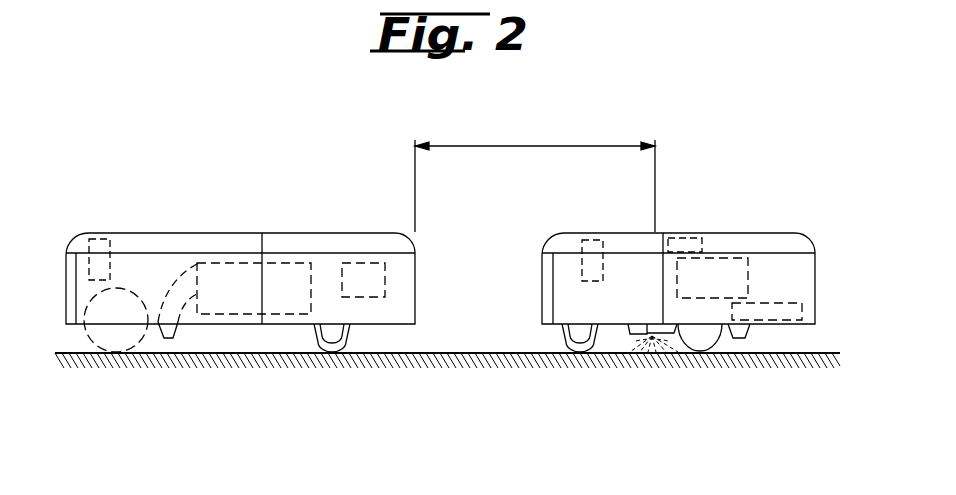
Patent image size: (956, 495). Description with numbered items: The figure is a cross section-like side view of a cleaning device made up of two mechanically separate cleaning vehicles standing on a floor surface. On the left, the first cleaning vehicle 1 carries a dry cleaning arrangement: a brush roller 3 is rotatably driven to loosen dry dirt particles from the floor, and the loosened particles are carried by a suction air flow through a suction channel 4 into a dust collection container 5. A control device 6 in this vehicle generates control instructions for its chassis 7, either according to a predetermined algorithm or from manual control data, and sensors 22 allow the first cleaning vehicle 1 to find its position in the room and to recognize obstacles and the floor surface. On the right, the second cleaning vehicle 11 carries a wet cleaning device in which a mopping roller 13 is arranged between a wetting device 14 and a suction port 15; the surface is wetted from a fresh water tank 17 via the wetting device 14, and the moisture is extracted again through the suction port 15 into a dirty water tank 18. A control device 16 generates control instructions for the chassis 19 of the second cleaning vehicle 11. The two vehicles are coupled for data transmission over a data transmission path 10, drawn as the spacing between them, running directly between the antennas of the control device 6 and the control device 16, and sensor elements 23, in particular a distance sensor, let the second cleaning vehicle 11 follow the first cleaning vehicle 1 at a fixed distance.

The first cleaning vehicle 1 is at (208, 222).
The brush roller 3 is at (105, 340).
The suction channel 4 is at (169, 338).
The dust collection container 5 is at (283, 278).
The control device 6 is at (367, 268).
The chassis 7 is at (330, 338).
The data transmission path 10 is at (535, 146).
The second cleaning vehicle 11 is at (760, 222).
The mopping roller 13 is at (703, 346).
The wetting device 14 is at (645, 332).
The suction port 15 is at (740, 338).
The control device 16 is at (683, 240).
The fresh water tank 17 is at (713, 268).
The dirty water tank 18 is at (770, 315).
The chassis 19 is at (575, 338).
The sensors 22 is at (103, 238).
The sensor elements 23 is at (597, 236).